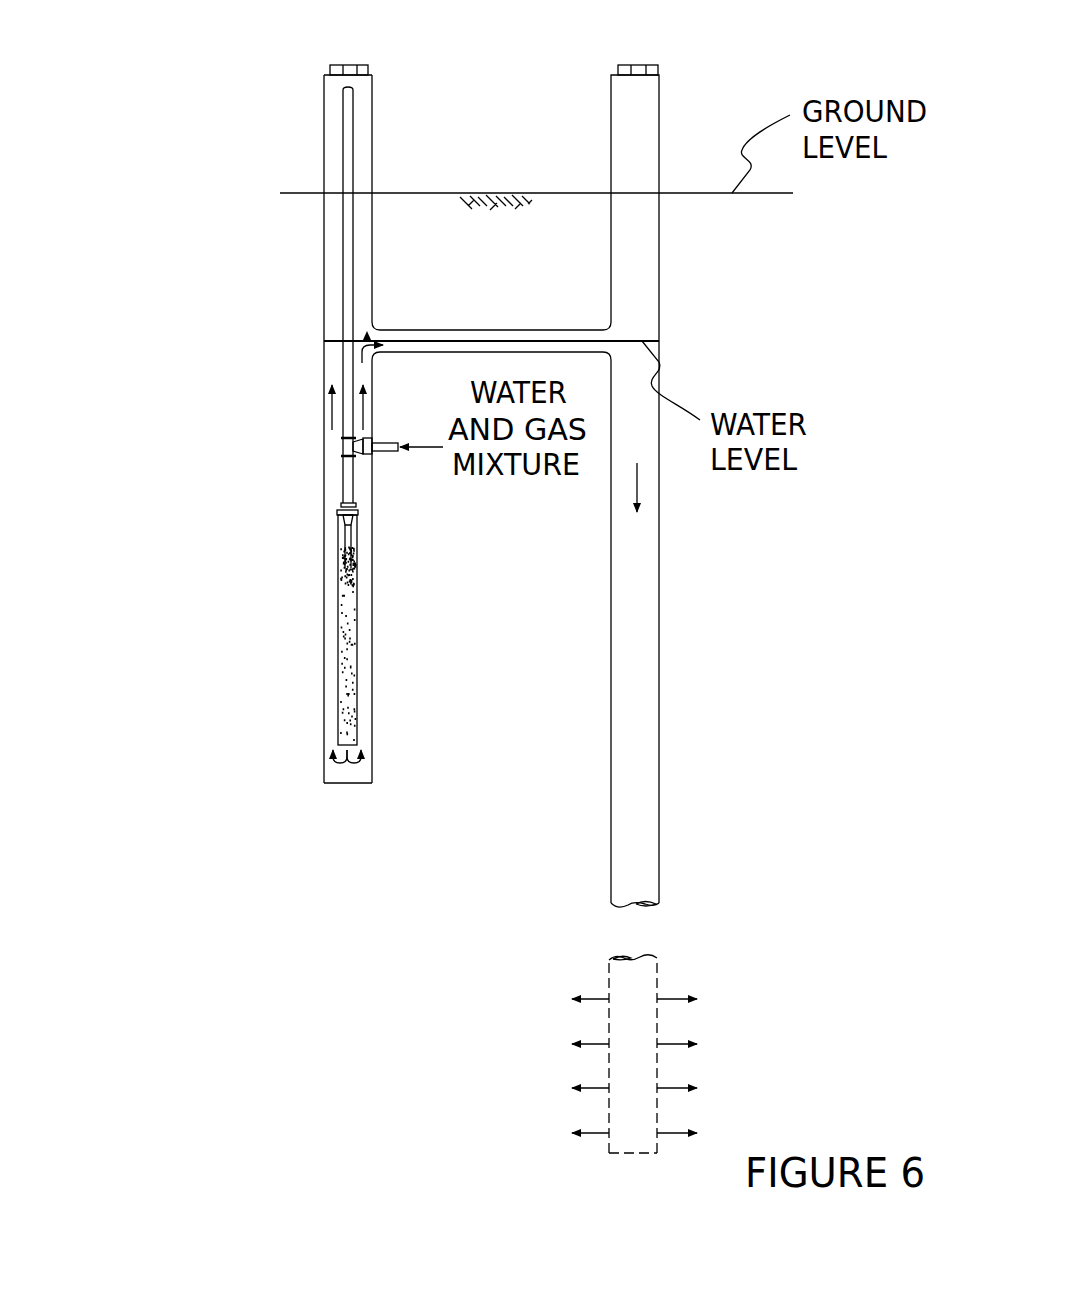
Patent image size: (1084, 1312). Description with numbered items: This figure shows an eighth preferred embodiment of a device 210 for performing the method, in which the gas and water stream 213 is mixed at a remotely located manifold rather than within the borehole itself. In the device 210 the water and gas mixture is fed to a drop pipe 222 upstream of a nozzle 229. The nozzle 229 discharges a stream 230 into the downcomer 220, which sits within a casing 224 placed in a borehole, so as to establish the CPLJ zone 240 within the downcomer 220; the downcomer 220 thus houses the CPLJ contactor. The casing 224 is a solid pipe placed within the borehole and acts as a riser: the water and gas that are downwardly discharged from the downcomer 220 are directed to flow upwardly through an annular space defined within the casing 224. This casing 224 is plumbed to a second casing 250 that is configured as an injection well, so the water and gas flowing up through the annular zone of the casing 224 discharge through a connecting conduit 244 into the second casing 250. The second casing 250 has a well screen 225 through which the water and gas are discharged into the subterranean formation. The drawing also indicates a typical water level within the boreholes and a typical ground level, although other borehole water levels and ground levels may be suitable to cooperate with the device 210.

The device 210 is at (188, 141).
The gas and water stream 213 is at (419, 447).
The downcomer 220 is at (357, 677).
The drop pipe 222 is at (345, 285).
The casing 224 is at (323, 602).
The well screen 225 is at (657, 1072).
The nozzle 229 is at (358, 512).
The stream 230 is at (340, 536).
The CPLJ zone 240 is at (357, 568).
The connecting conduit 244 is at (437, 330).
The second casing 250 is at (660, 652).